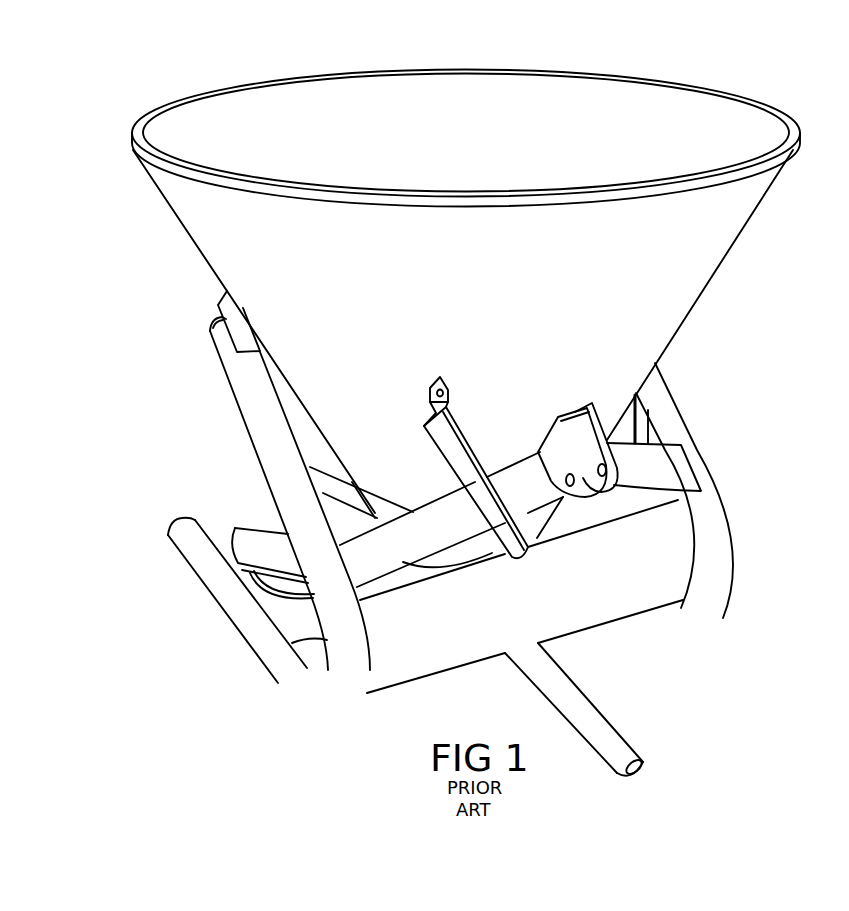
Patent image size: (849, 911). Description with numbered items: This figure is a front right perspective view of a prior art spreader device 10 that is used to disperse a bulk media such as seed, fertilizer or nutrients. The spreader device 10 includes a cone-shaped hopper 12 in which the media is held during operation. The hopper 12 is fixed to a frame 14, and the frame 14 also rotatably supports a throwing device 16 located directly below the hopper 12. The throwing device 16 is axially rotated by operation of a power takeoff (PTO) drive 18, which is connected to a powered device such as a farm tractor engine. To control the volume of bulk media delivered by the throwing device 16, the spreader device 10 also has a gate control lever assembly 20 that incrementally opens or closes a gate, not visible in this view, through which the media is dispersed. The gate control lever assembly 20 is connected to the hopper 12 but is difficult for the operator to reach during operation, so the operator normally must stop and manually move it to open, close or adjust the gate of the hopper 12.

The spreader device 10 is at (737, 68).
The cone-shaped hopper 12 is at (203, 108).
The frame 14 is at (719, 573).
The throwing device 16 is at (292, 583).
The power takeoff (PTO) drive 18 is at (613, 733).
The gate control lever assembly 20 is at (531, 527).